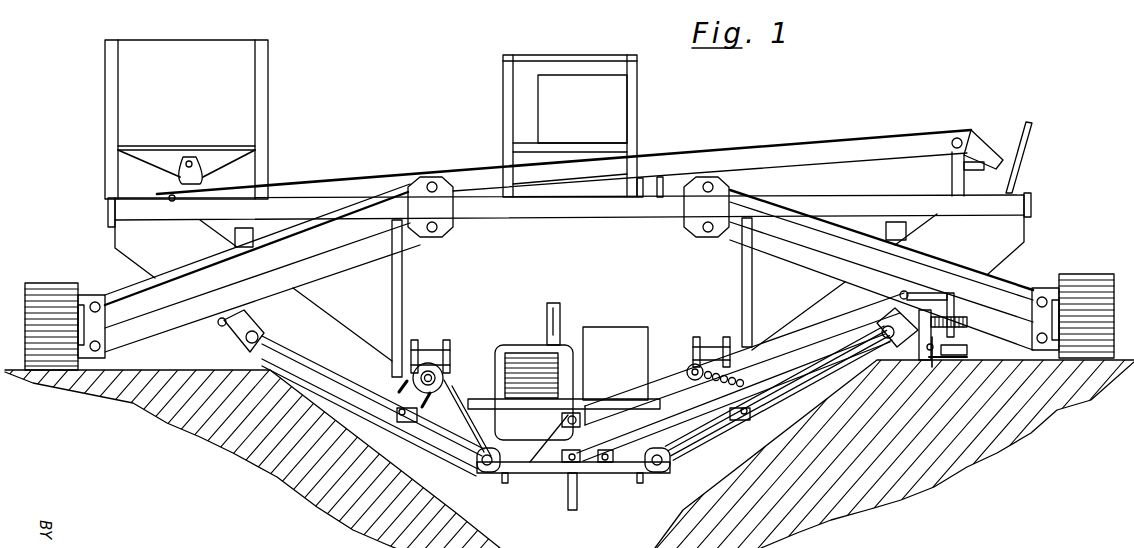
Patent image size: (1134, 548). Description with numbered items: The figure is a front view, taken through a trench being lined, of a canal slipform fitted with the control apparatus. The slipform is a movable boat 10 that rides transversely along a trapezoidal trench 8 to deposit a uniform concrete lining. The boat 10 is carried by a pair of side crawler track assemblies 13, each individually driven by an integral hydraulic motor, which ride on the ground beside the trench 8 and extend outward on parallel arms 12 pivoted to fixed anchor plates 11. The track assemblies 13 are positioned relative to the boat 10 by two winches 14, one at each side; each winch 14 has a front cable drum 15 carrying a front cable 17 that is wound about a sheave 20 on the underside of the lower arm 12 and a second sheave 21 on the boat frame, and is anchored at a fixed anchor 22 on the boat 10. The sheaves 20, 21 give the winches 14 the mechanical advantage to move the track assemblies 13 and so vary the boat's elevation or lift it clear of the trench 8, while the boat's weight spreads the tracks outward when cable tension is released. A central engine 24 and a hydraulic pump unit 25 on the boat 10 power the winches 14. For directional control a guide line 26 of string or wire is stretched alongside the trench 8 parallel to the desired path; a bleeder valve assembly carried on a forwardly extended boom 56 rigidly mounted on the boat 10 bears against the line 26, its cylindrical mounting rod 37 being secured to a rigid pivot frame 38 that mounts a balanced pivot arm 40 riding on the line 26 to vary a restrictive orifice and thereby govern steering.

The trapezoidal trench 8 is at (338, 420).
The movable boat 10 is at (326, 307).
The fixed anchor plates 11 is at (447, 223).
The parallel arms 12 is at (347, 221).
The crawler track assemblies 13 is at (63, 287).
The winches 14 is at (434, 341).
The front cable drum 15 is at (445, 378).
The front cable 17 is at (367, 408).
The sheave 20 is at (246, 323).
The second sheave 21 is at (493, 472).
The fixed anchor 22 is at (407, 424).
The central engine 24 is at (500, 345).
The hydraulic pump unit 25 is at (610, 335).
The line 26 is at (934, 358).
The cylindrical mounting rod 37 is at (969, 332).
The rigid pivot frame 38 is at (971, 348).
The pivot arm 40 is at (967, 357).
The forwardly extended boom 56 is at (765, 347).